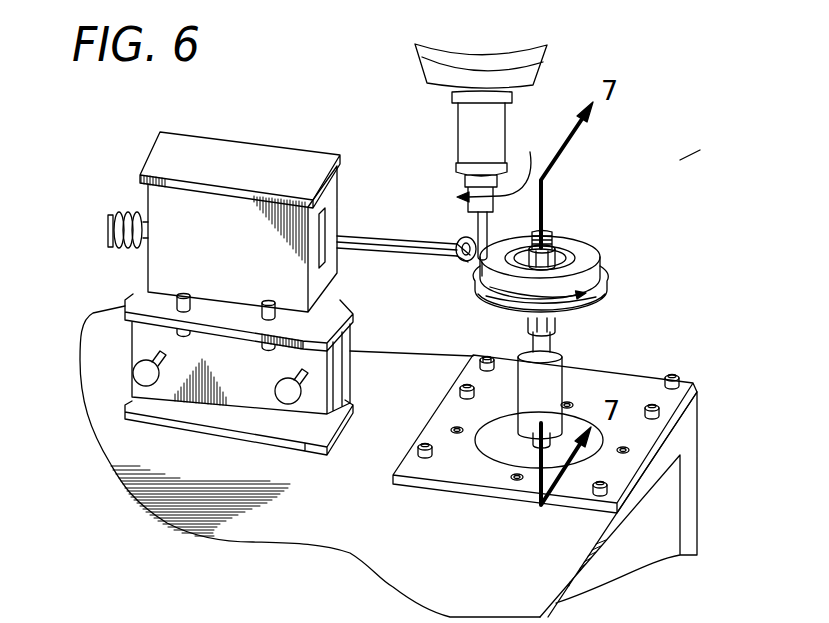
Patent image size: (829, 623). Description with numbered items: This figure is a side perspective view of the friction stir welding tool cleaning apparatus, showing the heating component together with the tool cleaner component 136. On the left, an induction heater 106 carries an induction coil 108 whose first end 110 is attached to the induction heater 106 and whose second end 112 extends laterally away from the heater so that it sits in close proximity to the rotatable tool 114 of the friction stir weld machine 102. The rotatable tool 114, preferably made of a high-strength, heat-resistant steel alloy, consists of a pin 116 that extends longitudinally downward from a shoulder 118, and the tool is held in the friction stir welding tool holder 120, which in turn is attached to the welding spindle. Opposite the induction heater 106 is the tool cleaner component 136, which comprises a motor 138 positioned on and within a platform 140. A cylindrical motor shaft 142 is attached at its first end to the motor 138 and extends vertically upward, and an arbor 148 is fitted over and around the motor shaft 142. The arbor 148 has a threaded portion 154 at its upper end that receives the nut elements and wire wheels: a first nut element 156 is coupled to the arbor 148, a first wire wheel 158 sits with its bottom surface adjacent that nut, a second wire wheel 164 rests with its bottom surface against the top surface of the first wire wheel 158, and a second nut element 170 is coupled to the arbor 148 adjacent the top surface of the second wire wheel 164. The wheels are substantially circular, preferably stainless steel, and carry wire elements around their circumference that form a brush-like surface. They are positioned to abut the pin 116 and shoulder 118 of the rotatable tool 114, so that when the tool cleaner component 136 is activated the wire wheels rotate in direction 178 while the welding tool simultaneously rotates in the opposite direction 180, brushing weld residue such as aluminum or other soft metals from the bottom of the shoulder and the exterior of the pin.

The friction stir weld machine 102 is at (546, 62).
The induction heater 106 is at (178, 165).
The induction coil 108 is at (375, 237).
The first end 110 is at (103, 220).
The second end 112 is at (459, 240).
The rotatable tool 114 is at (460, 212).
The pin 116 is at (478, 275).
The shoulder 118 is at (462, 259).
The friction stir welding tool holder 120 is at (458, 130).
The tool cleaner component 136 is at (688, 164).
The motor 138 is at (495, 440).
The platform 140 is at (647, 393).
The motor shaft 142 is at (533, 447).
The arbor 148 is at (570, 390).
The threaded portion 154 is at (549, 238).
The first nut element 156 is at (567, 250).
The first wire wheel 158 is at (600, 267).
The second wire wheel 164 is at (605, 289).
The second nut element 170 is at (565, 330).
The direction 178 is at (510, 292).
The direction 180 is at (504, 165).